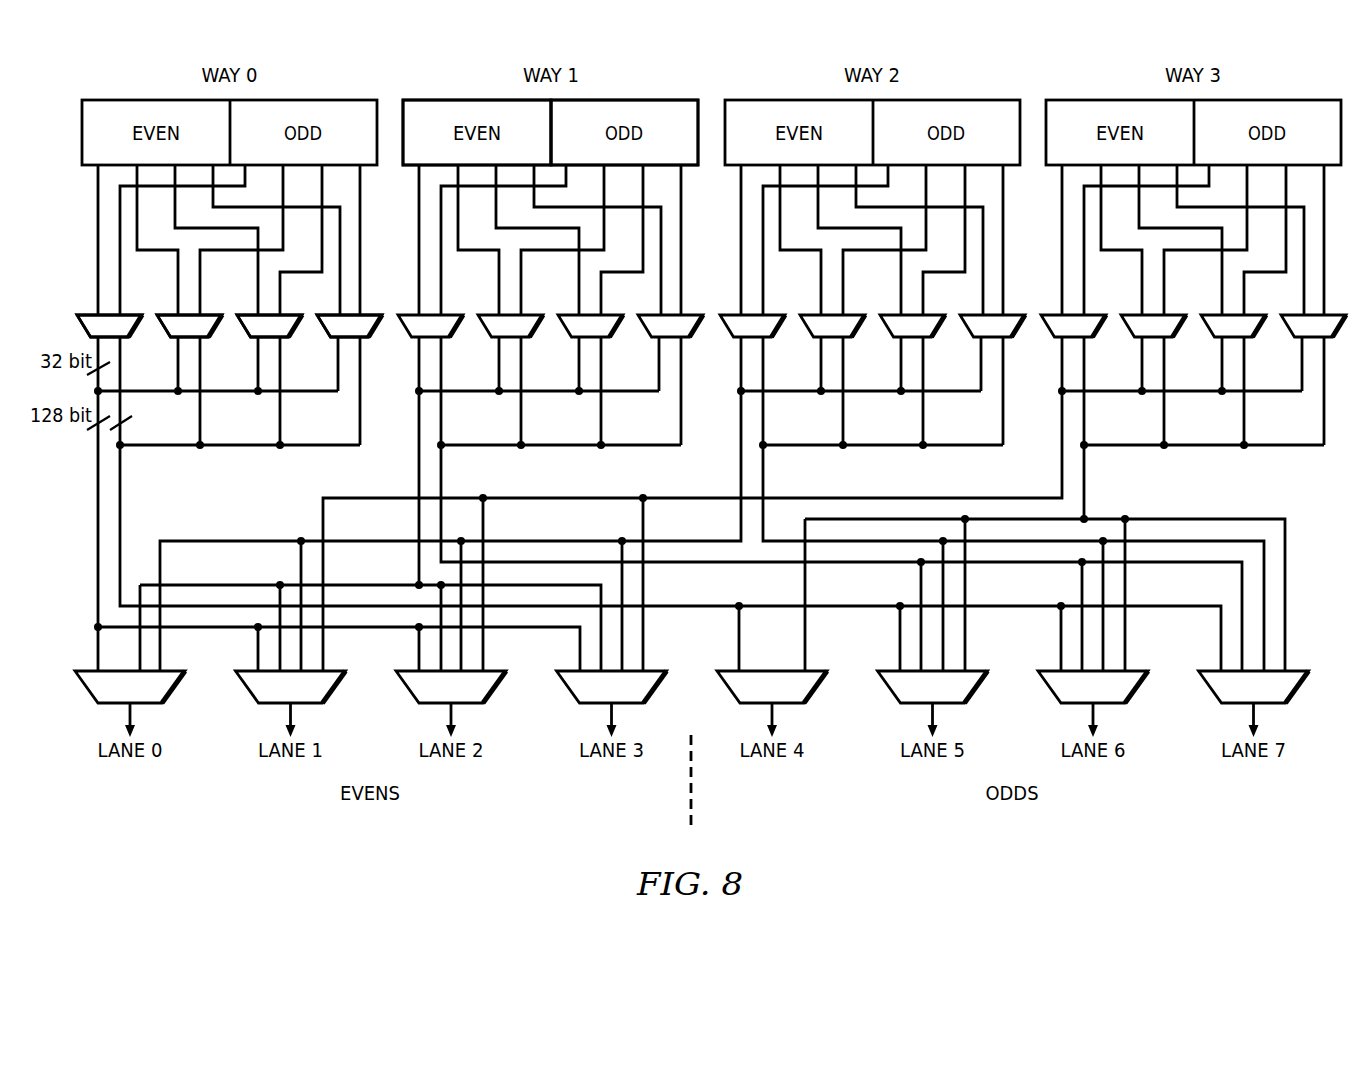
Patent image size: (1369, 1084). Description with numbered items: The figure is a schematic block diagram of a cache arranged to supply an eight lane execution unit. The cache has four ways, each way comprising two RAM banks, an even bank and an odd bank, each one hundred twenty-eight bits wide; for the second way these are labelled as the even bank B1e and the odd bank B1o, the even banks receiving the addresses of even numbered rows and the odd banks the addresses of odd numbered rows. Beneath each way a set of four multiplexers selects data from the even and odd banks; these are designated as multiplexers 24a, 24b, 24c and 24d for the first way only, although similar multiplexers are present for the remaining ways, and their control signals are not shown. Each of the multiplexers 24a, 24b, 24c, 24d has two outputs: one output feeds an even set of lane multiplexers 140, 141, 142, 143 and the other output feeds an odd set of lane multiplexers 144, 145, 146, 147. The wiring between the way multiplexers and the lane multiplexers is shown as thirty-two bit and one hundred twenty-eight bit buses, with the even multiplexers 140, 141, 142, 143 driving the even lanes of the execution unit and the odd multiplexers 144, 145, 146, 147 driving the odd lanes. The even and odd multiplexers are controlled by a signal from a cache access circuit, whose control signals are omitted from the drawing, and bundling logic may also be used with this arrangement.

The multiplexer 24a is at (89, 315).
The multiplexer 24b is at (169, 315).
The multiplexer 24c is at (249, 315).
The multiplexer 24d is at (378, 315).
The even multiplexer 140 is at (173, 687).
The even multiplexer 141 is at (334, 687).
The even multiplexer 142 is at (494, 687).
The even multiplexer 143 is at (654, 687).
The odd multiplexer 144 is at (815, 687).
The odd multiplexer 145 is at (976, 687).
The odd multiplexer 146 is at (1136, 687).
The odd multiplexer 147 is at (1296, 687).
The even bank of way 1 B1e is at (472, 100).
The odd bank of way 1 B1o is at (629, 100).